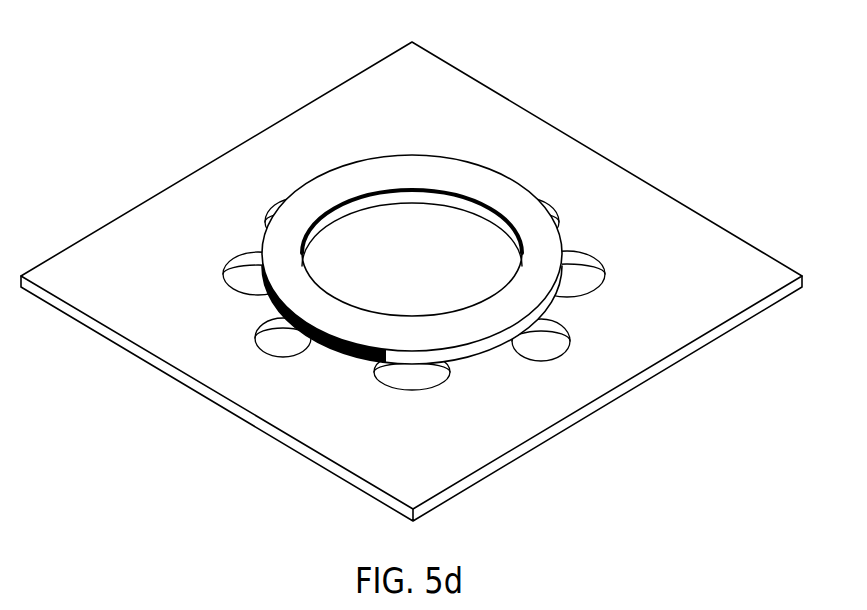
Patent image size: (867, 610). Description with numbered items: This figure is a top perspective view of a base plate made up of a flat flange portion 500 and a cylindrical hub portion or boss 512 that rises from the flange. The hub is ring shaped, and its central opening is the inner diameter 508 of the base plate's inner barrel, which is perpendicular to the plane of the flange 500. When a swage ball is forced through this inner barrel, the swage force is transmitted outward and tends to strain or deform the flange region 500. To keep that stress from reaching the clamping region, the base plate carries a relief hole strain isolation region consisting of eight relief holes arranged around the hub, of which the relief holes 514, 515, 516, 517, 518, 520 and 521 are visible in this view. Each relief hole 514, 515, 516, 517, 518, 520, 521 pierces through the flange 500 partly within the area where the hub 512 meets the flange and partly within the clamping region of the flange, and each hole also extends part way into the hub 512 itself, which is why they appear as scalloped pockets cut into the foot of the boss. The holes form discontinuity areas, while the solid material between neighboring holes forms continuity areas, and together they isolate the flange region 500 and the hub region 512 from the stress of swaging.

The flat flange portion 500 is at (731, 248).
The inner diameter 508 is at (436, 198).
The cylindrical hub portion 512 is at (494, 192).
The relief hole 514 is at (287, 359).
The relief hole 515 is at (408, 390).
The relief hole 516 is at (556, 213).
The relief hole 517 is at (604, 272).
The relief hole 518 is at (560, 353).
The relief hole 520 is at (268, 209).
The relief hole 521 is at (230, 257).